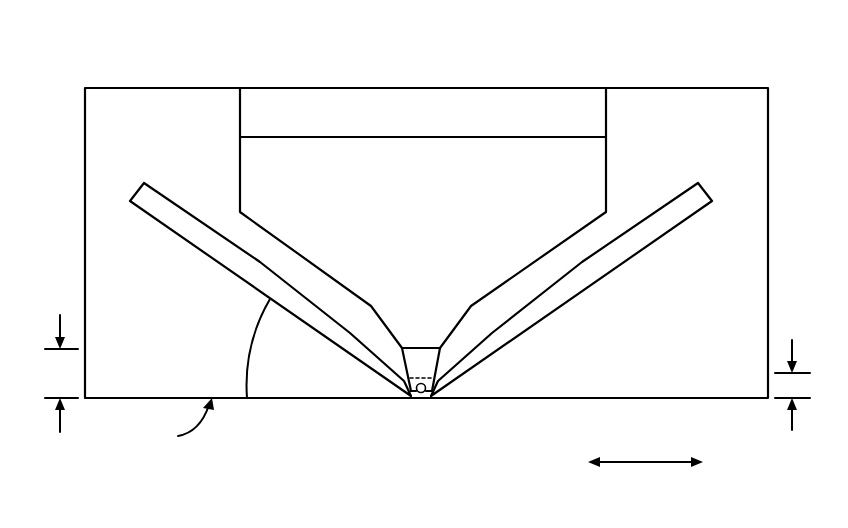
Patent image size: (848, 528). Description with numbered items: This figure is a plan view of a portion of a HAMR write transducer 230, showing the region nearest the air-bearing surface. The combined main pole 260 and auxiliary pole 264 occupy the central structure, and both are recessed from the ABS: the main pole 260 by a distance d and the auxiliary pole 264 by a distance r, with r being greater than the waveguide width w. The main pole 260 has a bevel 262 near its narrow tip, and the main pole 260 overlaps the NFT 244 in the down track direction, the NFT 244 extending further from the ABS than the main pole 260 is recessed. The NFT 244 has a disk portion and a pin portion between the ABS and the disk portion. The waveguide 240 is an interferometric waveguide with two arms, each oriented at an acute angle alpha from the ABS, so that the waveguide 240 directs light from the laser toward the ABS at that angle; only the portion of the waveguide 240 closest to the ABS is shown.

The HAMR write transducer 230 is at (390, 36).
The main pole 260 is at (265, 88).
The auxiliary pole 264 is at (468, 137).
The waveguide 240 is at (135, 206).
The NFT 244 is at (421, 393).
The bevel 262 is at (447, 394).